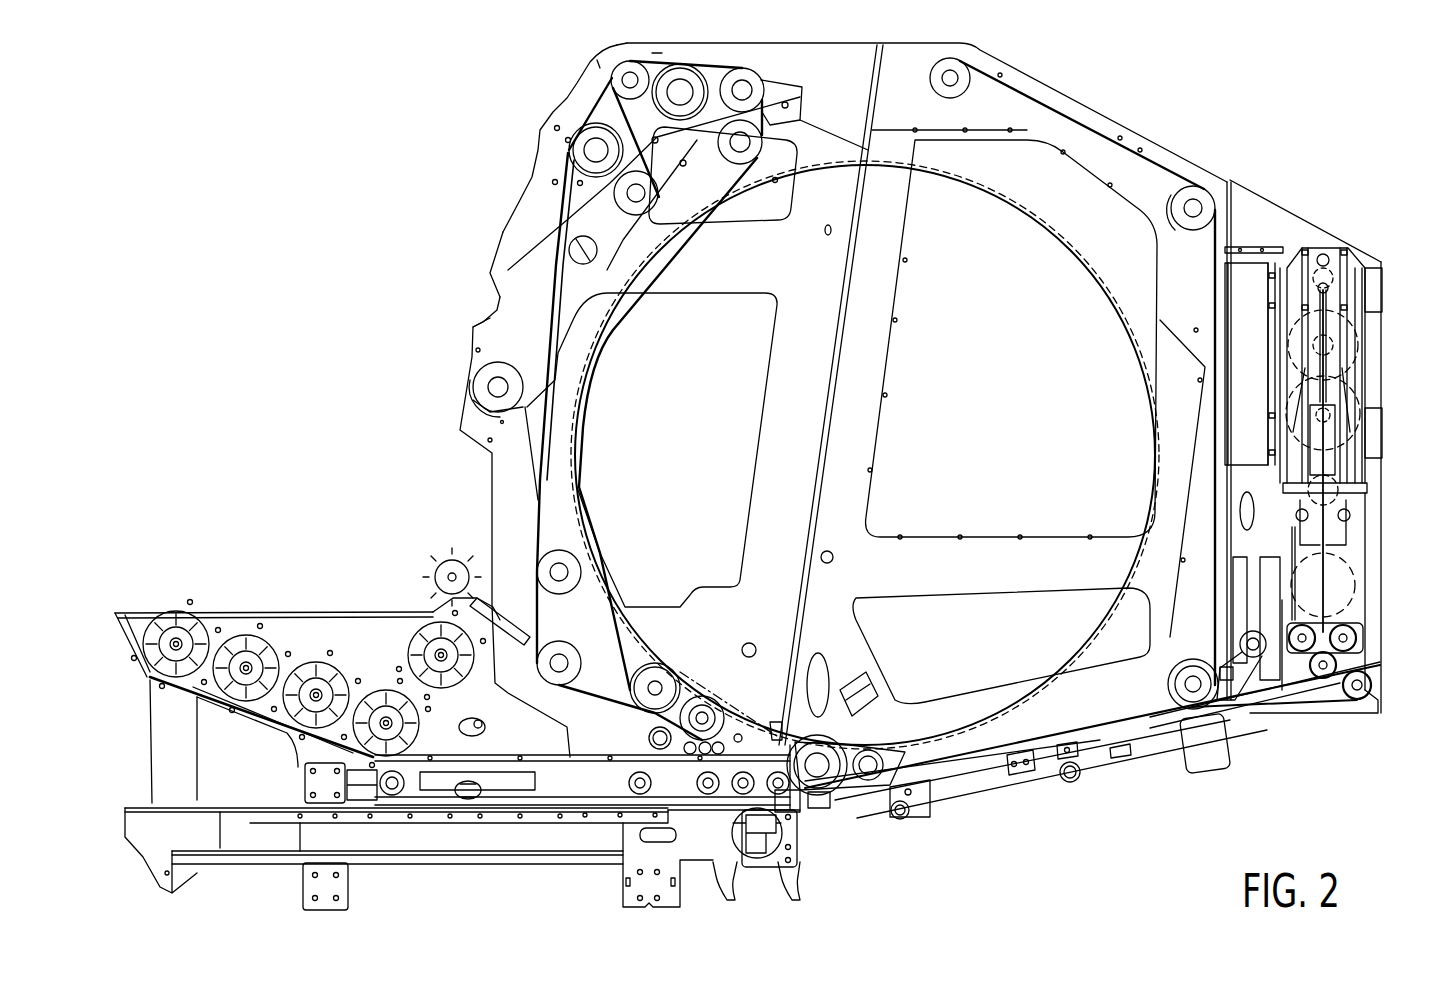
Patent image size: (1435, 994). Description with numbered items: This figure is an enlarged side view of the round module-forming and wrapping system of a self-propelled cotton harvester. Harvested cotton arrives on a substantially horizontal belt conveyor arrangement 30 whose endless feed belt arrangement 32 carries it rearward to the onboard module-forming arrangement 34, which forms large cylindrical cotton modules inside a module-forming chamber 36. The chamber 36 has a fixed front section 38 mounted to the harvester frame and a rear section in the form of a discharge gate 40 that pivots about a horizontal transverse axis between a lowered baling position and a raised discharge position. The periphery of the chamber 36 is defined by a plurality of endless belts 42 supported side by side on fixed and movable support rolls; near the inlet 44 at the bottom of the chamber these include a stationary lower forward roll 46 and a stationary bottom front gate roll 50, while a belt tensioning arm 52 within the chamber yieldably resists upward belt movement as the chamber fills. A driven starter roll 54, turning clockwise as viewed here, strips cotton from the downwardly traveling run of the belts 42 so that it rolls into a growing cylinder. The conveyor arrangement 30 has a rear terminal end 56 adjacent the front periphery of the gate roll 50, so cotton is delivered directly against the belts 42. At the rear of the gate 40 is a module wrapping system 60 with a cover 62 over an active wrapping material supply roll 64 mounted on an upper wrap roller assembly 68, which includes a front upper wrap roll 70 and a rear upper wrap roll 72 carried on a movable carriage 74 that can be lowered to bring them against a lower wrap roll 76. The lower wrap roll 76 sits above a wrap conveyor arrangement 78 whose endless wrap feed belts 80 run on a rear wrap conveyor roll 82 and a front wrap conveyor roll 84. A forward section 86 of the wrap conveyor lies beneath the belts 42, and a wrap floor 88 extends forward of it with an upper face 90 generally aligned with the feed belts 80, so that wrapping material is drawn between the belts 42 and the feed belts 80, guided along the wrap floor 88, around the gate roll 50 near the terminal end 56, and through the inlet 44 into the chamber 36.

The belt conveyor arrangement 30 is at (548, 824).
The endless feed belt arrangement 32 is at (570, 758).
The module-forming arrangement 34 is at (1170, 88).
The module-forming chamber 36 is at (1003, 298).
The fixed front section 38 is at (527, 185).
The discharge gate 40 is at (1183, 155).
The belts 42 is at (735, 185).
The inlet 44 is at (762, 720).
The stationary lower forward roll 46 is at (670, 672).
The stationary bottom front gate roll 50 is at (797, 803).
The belt tensioning arm 52 is at (512, 275).
The driven starter roll 54 is at (700, 706).
The rear terminal end 56 is at (795, 808).
The module wrapping system 60 is at (1355, 204).
The cover 62 is at (1278, 202).
The wrapping material supply roll 64 is at (1357, 580).
The upper wrap roller assembly 68 is at (1380, 648).
The front upper wrap roll 70 is at (1290, 680).
The rear upper wrap roll 72 is at (1362, 700).
The movable carriage 74 is at (1358, 636).
The lower wrap roll 76 is at (1316, 680).
The wrap conveyor arrangement 78 is at (1236, 776).
The wrap feed belts 80 is at (1125, 753).
The rear wrap conveyor roll 82 is at (1348, 712).
The front wrap conveyor roll 84 is at (1090, 765).
The forward section 86 is at (1050, 757).
The wrap floor 88 is at (920, 770).
The upper face 90 is at (942, 755).